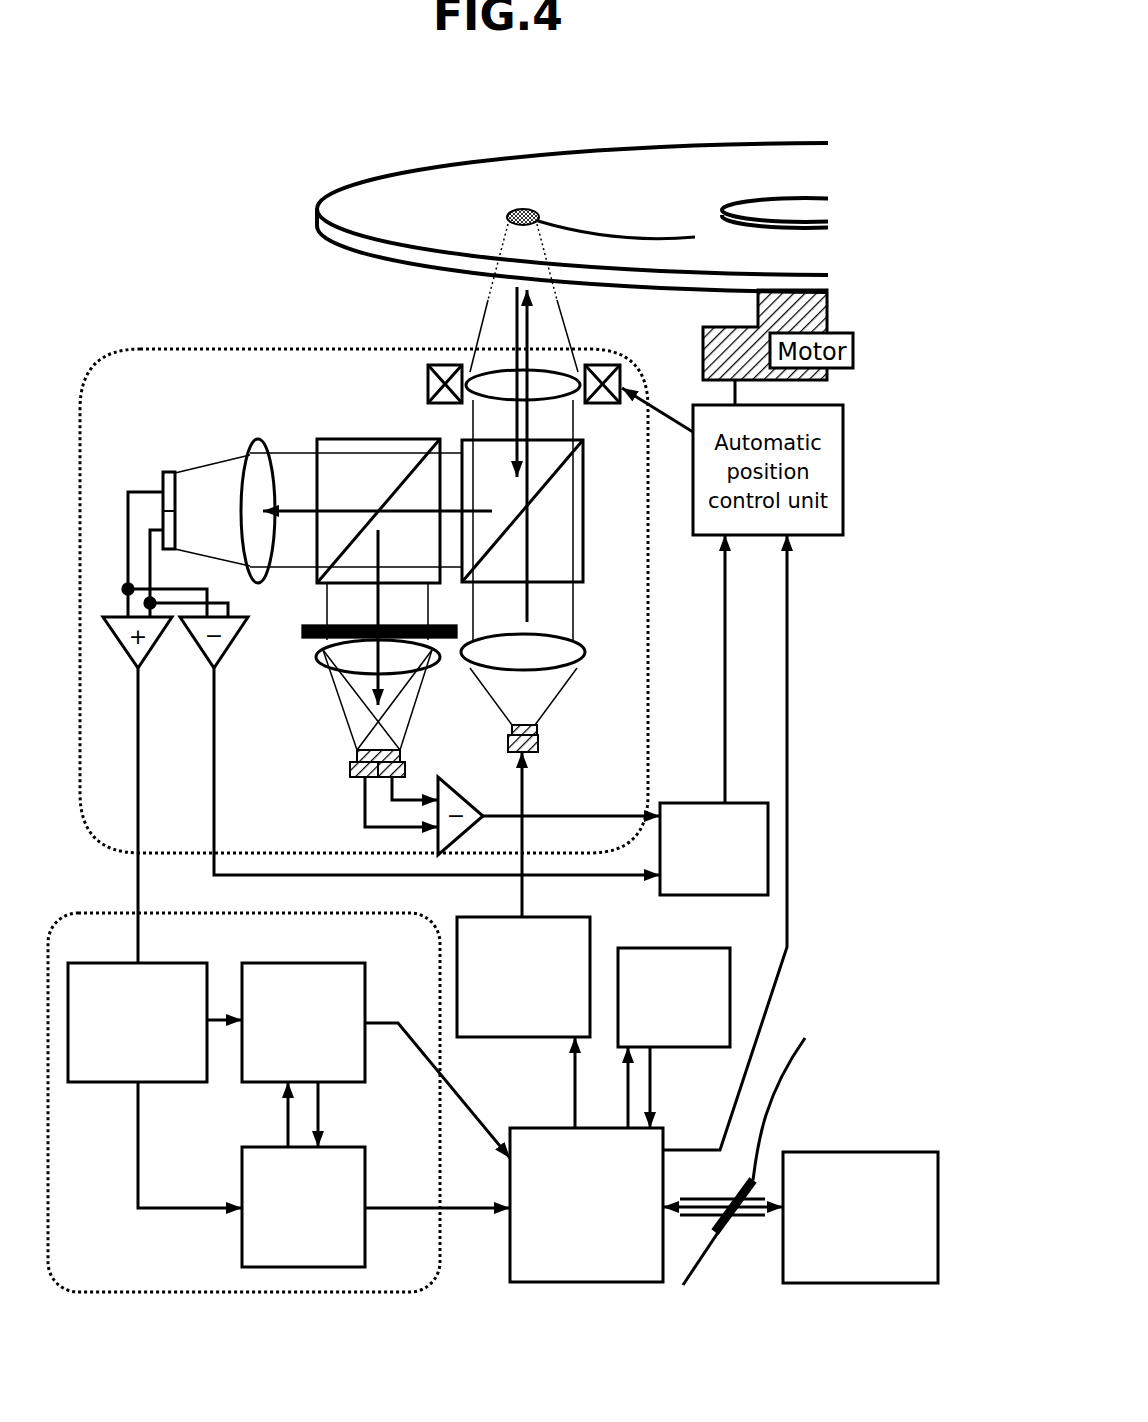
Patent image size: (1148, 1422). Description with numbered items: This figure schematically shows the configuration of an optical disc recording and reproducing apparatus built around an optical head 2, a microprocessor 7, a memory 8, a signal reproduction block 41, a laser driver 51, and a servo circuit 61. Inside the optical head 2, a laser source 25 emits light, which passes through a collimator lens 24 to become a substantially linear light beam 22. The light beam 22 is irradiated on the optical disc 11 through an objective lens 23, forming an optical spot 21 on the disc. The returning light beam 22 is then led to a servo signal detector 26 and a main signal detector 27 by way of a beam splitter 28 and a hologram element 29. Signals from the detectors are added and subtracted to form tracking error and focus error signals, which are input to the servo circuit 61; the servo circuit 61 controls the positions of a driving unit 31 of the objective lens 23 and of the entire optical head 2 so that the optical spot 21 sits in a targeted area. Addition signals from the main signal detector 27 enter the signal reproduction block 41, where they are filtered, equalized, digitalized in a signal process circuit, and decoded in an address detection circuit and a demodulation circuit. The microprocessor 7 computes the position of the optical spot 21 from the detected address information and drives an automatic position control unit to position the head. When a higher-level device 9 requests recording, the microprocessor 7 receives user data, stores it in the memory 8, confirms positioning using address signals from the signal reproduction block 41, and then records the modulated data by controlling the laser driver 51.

The optical disc 11 is at (630, 186).
The optical spot 21 is at (536, 208).
The optical head 2 is at (150, 349).
The light beam 22 is at (527, 332).
The objective lens 23 is at (500, 383).
The collimator lens 24 is at (258, 440).
The laser source 25 is at (540, 731).
The servo signal detector 26 is at (350, 770).
The main signal detector 27 is at (168, 472).
The beam splitter 28 is at (585, 570).
The hologram element 29 is at (305, 632).
The driving unit 31 is at (600, 404).
The signal reproduction block 41 is at (115, 913).
The laser driver 51 is at (482, 1037).
The servo circuit 61 is at (748, 803).
The microprocessor 7 is at (665, 1140).
The memory 8 is at (705, 947).
The higher-level device 9 is at (800, 1152).